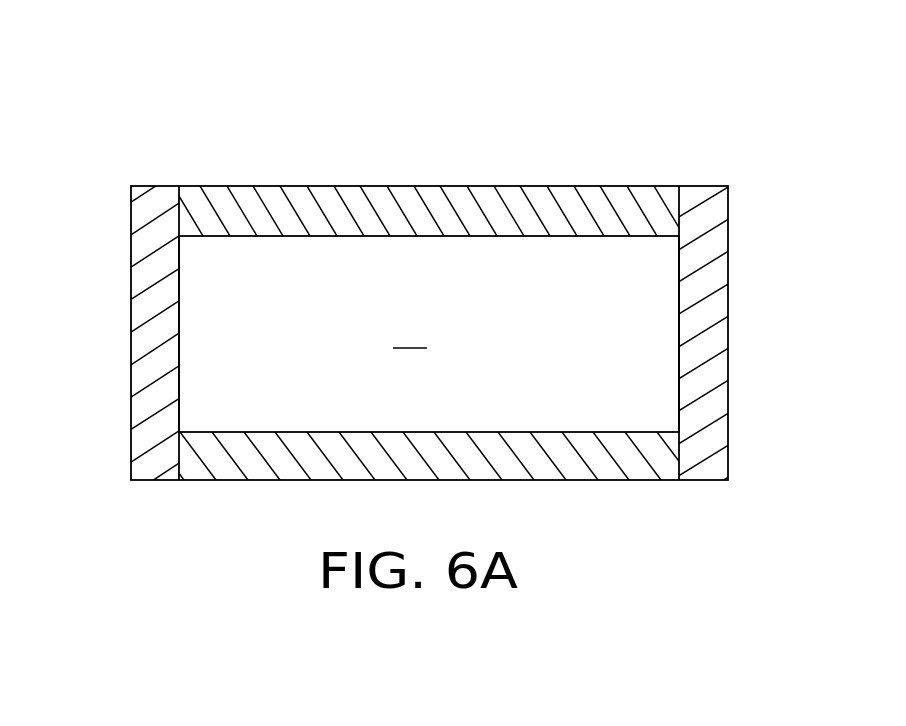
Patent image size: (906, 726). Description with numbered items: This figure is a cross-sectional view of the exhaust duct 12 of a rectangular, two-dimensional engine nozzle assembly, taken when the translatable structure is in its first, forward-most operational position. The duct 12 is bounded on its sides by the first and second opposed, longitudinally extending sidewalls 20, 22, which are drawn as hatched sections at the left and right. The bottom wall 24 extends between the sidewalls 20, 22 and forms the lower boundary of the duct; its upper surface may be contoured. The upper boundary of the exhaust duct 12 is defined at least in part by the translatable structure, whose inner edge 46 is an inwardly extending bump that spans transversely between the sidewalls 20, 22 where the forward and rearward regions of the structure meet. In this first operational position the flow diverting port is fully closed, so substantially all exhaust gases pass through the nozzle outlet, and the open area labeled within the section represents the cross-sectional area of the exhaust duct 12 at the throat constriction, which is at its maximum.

The exhaust duct 12 is at (150, 108).
The first sidewall 20 is at (131, 283).
The second sidewall 22 is at (728, 270).
The bottom wall 24 is at (327, 481).
The inner edge 46 is at (512, 237).